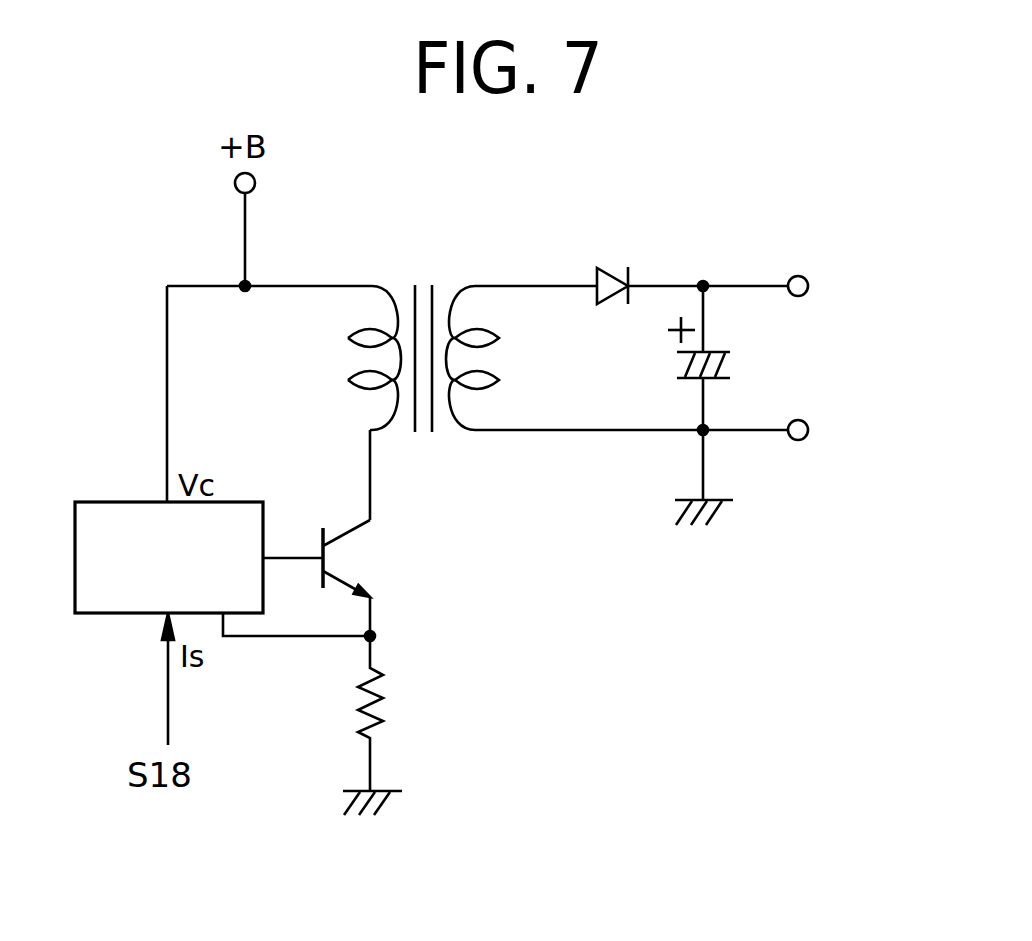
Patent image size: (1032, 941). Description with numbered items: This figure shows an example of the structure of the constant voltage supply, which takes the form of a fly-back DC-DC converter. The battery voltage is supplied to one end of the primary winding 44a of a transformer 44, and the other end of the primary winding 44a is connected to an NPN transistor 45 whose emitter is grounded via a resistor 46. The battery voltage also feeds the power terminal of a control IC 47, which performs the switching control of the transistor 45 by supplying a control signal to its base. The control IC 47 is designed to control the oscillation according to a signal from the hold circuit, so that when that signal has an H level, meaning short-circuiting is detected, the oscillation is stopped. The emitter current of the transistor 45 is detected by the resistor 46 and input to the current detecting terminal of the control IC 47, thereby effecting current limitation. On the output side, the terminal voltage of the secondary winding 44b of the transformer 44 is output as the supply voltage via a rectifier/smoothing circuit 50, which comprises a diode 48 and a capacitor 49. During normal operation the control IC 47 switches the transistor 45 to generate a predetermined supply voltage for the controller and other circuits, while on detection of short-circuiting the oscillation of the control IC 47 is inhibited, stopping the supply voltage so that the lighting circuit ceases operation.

The transformer 44 is at (517, 205).
The primary winding 44a is at (392, 286).
The secondary winding 44b is at (455, 286).
The NPN transistor 45 is at (323, 531).
The resistor 46 is at (380, 705).
The control IC 47 is at (93, 617).
The diode 48 is at (594, 275).
The capacitor 49 is at (723, 378).
The rectifier/smoothing circuit 50 is at (666, 222).